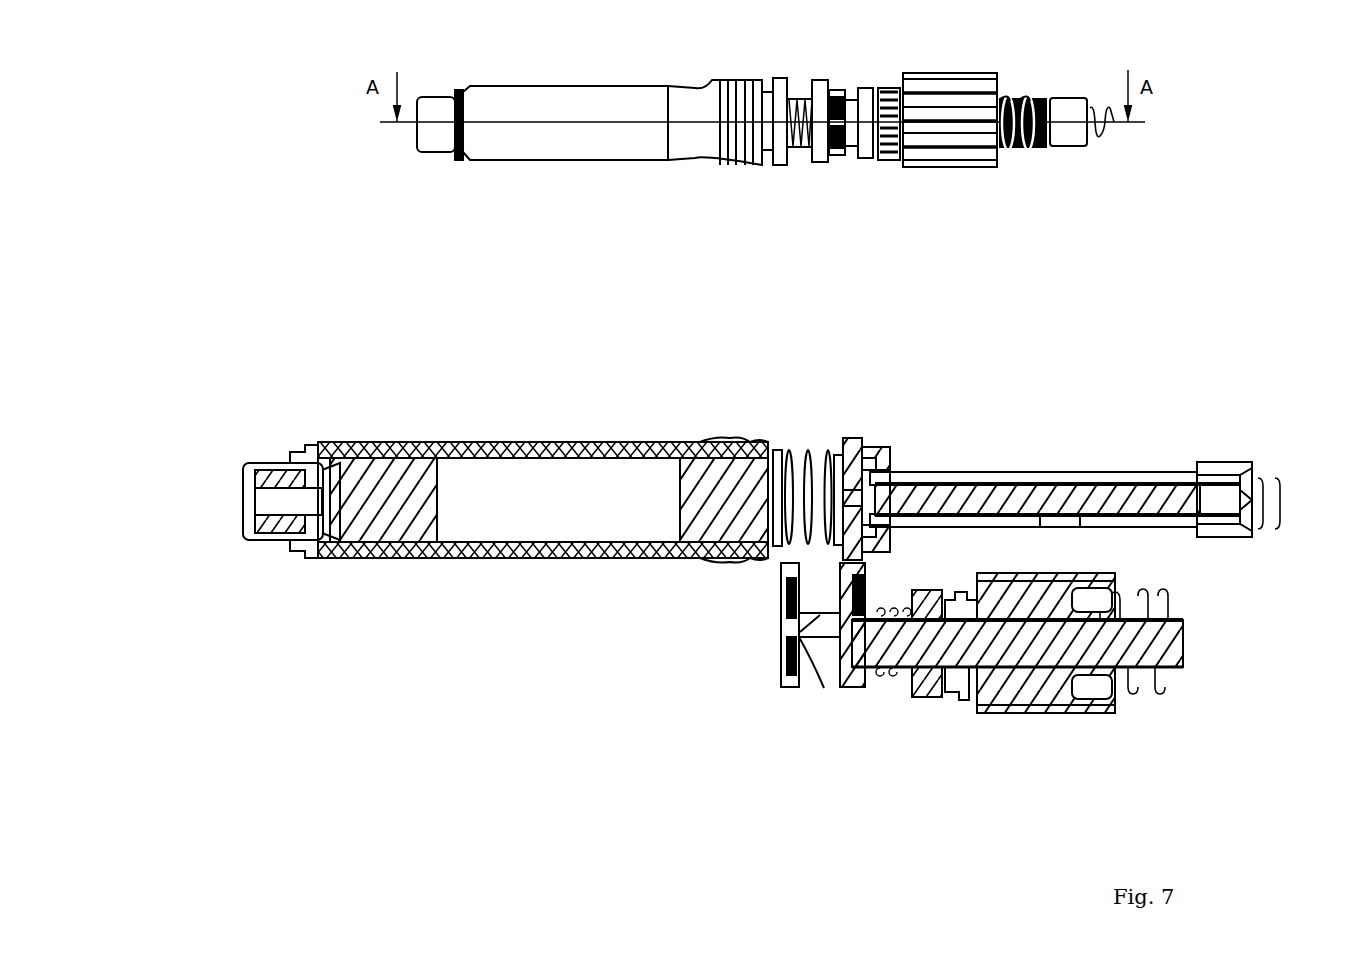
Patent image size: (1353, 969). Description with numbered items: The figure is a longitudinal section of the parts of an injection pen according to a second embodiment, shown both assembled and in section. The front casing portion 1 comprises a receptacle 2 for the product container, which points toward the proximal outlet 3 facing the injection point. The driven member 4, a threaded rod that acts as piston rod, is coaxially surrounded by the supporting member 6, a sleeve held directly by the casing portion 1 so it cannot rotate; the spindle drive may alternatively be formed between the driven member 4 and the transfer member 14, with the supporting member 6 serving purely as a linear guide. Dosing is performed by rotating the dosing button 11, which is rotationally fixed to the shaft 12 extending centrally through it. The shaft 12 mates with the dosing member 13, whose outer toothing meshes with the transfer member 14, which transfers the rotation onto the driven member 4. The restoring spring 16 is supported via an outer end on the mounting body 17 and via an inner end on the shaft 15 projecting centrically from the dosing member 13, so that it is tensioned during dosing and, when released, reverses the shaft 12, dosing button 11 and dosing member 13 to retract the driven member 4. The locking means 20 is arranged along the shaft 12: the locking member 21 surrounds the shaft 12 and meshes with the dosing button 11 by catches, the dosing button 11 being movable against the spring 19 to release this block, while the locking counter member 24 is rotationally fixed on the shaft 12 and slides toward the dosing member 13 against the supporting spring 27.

The front casing portion 1 is at (551, 98).
The receptacle 2 is at (403, 467).
The outlet 3 is at (220, 505).
The driven member 4 is at (957, 497).
The supporting member 6 is at (1060, 477).
The dosing button 11 is at (957, 80).
The shaft 12 is at (1181, 650).
The dosing member 13 is at (822, 78).
The transfer member 14 is at (852, 438).
The shaft 15 is at (843, 647).
The restoring spring 16 is at (824, 630).
The mounting body 17 is at (787, 688).
The spring 19 is at (1162, 693).
The locking means 20 is at (890, 180).
The locking member 21 is at (961, 697).
The locking counter member 24 is at (910, 690).
The supporting spring 27 is at (884, 672).